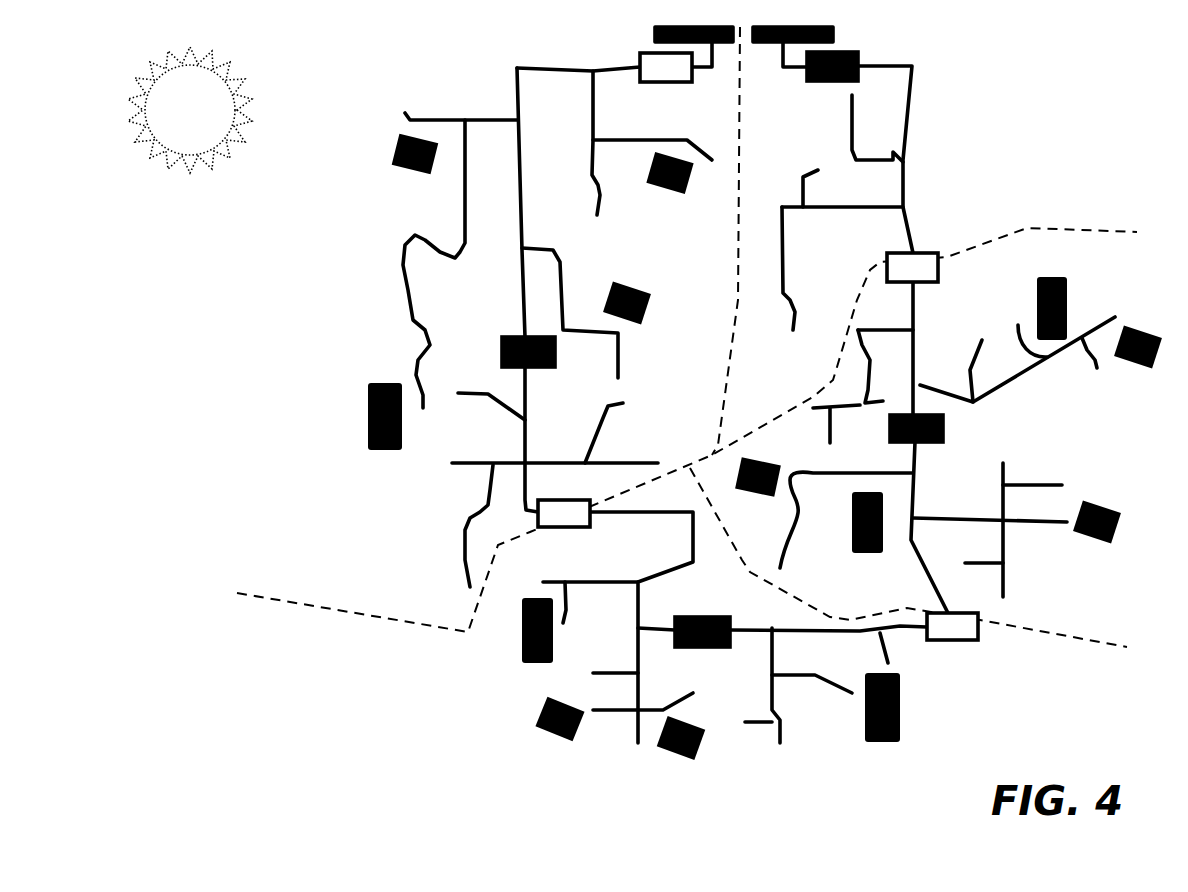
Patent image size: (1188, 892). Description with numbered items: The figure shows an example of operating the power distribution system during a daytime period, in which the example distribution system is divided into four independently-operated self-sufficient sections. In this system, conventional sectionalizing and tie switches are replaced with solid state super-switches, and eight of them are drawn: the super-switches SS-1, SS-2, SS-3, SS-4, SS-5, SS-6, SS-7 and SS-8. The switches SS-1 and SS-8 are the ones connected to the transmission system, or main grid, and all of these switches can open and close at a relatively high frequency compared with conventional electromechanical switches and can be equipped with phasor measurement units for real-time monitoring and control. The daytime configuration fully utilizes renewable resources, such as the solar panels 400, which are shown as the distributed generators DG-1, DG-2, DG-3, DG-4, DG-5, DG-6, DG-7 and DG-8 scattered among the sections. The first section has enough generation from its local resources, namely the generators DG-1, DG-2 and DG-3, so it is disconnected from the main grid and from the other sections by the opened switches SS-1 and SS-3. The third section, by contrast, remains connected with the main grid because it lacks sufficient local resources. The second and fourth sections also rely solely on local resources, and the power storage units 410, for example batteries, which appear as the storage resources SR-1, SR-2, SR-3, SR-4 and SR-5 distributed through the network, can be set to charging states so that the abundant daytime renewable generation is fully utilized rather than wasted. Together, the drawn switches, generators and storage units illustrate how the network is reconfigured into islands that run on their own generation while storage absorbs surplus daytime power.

The solar panels 400 is at (707, 405).
The power storage units 410 is at (1045, 275).
The super-switch SS-1 is at (665, 86).
The super-switch SS-2 is at (540, 371).
The super-switch SS-3 is at (564, 529).
The super-switch SS-4 is at (702, 649).
The super-switch SS-5 is at (952, 648).
The super-switch SS-6 is at (933, 445).
The super-switch SS-7 is at (922, 254).
The super-switch SS-8 is at (821, 85).
The distributed generator DG-1 is at (393, 160).
The distributed generator DG-2 is at (671, 191).
The distributed generator DG-3 is at (629, 290).
The distributed generator DG-4 is at (564, 735).
The distributed generator DG-5 is at (706, 747).
The distributed generator DG-6 is at (1096, 542).
The distributed generator DG-7 is at (757, 494).
The distributed generator DG-8 is at (1146, 365).
The storage resource SR-1 is at (369, 437).
The storage resource SR-2 is at (529, 648).
The storage resource SR-3 is at (885, 728).
The storage resource SR-4 is at (860, 539).
The storage resource SR-5 is at (1084, 308).